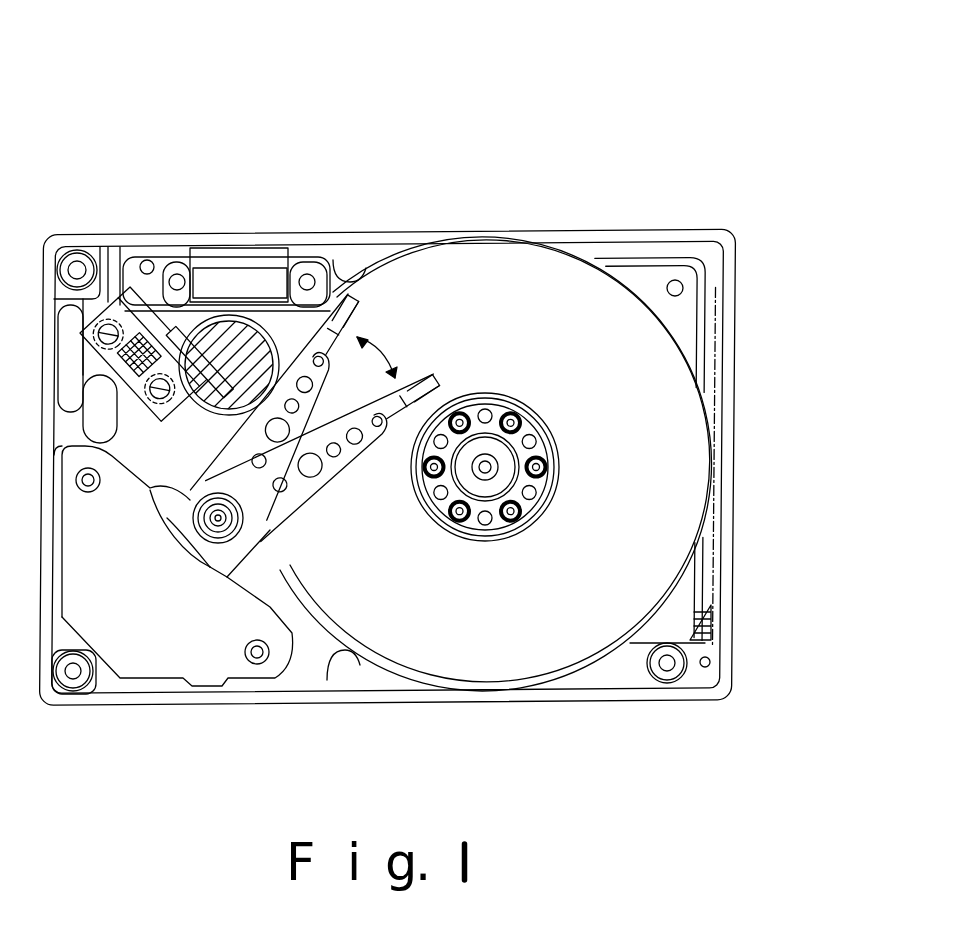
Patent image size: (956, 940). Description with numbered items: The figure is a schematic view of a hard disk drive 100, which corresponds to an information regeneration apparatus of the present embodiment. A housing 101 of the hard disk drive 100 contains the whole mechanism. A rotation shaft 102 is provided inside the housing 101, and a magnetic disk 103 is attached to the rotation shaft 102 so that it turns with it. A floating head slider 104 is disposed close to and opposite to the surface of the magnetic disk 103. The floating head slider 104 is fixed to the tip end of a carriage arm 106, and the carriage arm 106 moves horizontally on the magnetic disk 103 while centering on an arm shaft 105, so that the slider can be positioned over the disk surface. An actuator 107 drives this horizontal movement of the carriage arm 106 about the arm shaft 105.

The hard disk drive 100 is at (556, 124).
The housing 101 is at (597, 232).
The rotation shaft 102 is at (506, 475).
The magnetic disk 103 is at (678, 420).
The floating head slider 104 is at (417, 376).
The arm shaft 105 is at (218, 537).
The carriage arm 106 is at (295, 493).
The actuator 107 is at (135, 657).